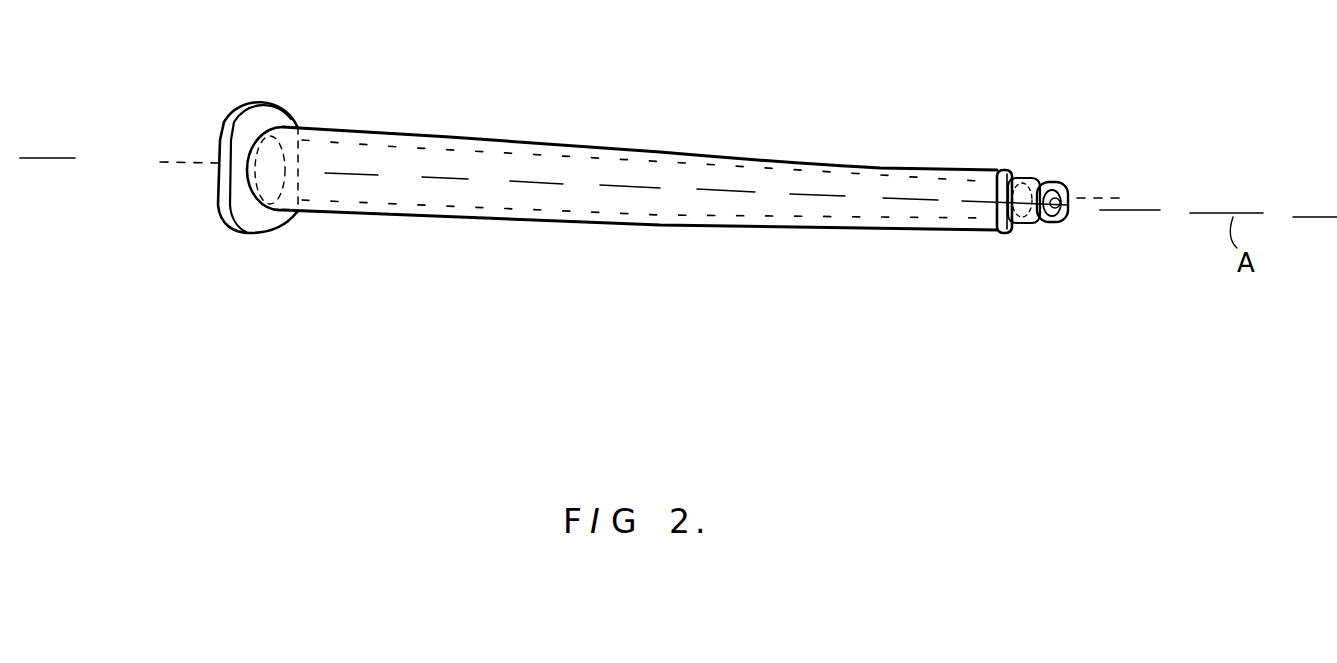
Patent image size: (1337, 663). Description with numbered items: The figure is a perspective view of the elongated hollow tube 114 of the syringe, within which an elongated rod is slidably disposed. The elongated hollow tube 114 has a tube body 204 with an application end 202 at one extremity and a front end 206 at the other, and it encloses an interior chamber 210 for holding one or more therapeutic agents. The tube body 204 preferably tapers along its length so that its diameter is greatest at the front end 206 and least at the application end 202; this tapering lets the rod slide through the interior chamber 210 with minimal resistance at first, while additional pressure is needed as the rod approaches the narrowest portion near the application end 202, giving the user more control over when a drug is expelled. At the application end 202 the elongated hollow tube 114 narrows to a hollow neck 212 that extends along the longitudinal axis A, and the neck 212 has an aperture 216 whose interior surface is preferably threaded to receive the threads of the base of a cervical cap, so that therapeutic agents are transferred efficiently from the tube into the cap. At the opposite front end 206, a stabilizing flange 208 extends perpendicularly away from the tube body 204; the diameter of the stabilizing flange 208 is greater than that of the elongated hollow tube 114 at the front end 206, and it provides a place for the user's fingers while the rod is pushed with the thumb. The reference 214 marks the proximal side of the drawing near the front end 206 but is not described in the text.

The elongated hollow tube 114 is at (1133, 94).
The application end 202 is at (1005, 233).
The tube body 204 is at (618, 227).
The front end 206 is at (245, 232).
The stabilizing flange 208 is at (263, 113).
The interior chamber 210 is at (510, 178).
The neck 212 is at (1038, 182).
The proximal end 214 is at (119, 165).
The aperture 216 is at (1207, 199).